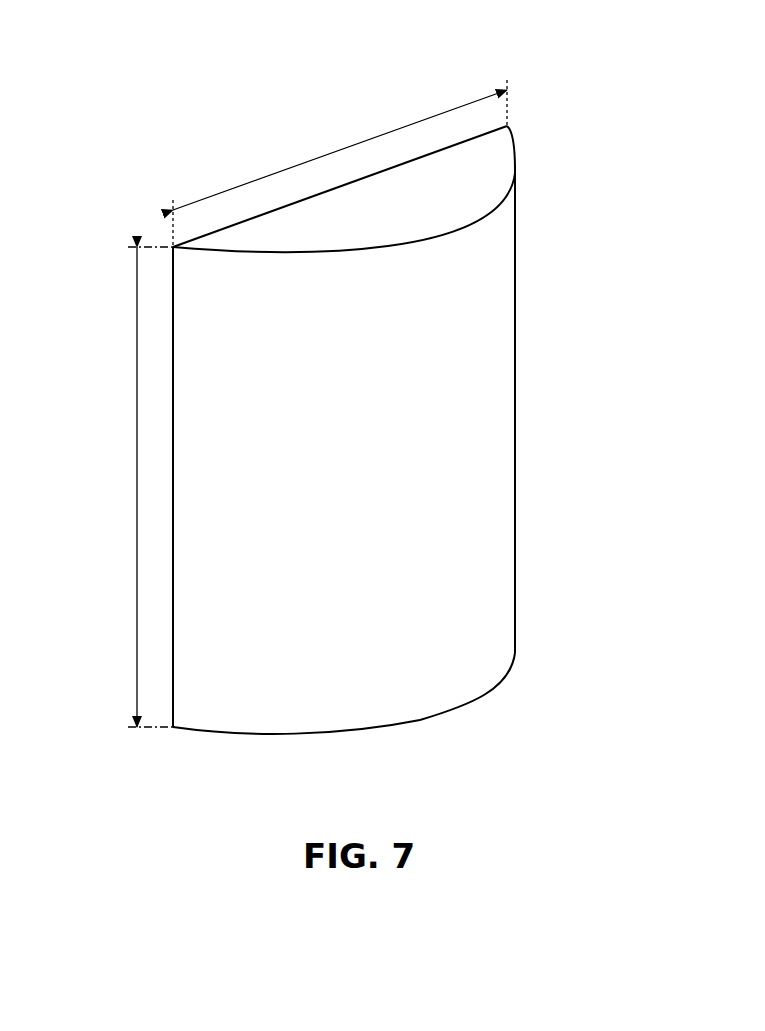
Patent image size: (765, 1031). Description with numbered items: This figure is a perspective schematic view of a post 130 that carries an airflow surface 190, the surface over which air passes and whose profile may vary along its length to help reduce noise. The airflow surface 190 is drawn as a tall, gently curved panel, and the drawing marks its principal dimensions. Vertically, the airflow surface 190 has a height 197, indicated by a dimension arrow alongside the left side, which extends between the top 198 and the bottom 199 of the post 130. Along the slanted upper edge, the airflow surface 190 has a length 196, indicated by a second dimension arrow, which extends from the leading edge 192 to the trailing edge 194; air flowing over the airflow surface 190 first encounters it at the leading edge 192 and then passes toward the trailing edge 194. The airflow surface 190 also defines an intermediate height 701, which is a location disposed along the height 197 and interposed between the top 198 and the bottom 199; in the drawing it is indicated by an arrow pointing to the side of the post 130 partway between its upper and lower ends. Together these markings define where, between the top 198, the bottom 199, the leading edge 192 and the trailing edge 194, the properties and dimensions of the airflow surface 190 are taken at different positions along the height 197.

The post 130 is at (365, 732).
The airflow surface 190 is at (457, 365).
The leading edge 192 is at (508, 66).
The trailing edge 194 is at (173, 190).
The length 196 is at (341, 152).
The height 197 is at (137, 487).
The top 198 is at (531, 125).
The bottom 199 is at (530, 642).
The intermediate height 701 is at (534, 368).